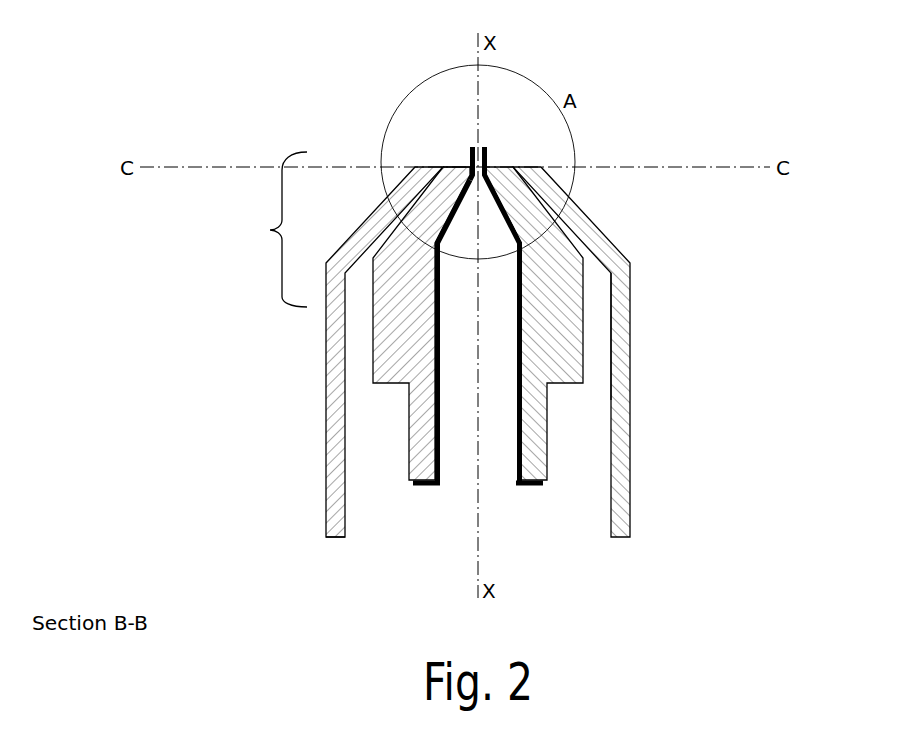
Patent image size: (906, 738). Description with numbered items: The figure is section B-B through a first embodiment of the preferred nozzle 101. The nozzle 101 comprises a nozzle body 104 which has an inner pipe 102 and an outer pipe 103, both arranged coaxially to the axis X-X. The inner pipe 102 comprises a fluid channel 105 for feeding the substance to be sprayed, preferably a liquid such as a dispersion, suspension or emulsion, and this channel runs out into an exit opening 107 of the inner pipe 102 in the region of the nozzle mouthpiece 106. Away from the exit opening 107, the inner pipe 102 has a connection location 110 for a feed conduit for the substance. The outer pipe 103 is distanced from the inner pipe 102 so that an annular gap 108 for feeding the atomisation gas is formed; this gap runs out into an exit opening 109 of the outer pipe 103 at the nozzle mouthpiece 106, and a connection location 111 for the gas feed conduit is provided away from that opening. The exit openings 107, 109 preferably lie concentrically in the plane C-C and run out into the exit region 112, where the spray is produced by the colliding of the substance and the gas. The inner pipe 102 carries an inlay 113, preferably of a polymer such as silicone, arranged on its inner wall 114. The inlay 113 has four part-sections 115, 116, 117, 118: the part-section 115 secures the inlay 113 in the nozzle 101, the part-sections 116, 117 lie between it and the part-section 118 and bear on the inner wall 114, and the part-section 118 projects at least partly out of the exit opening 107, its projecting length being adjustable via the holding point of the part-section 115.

The nozzle 101 is at (274, 69).
The inner pipe 102 is at (553, 357).
The outer pipe 103 is at (622, 492).
The nozzle body 104 is at (600, 170).
The fluid channel 105 is at (497, 442).
The nozzle mouthpiece 106 is at (268, 230).
The exit opening of the inner pipe 107 is at (494, 159).
The annular gap 108 is at (593, 302).
The exit opening of the outer pipe 109 is at (451, 160).
The connection location 110 is at (394, 432).
The connection location 111 is at (332, 552).
The exit region 112 is at (517, 136).
The inlay 113 is at (438, 472).
The inner wall 114 is at (446, 327).
The part-section 115 is at (427, 486).
The part-section 116 is at (441, 420).
The part-section 117 is at (523, 217).
The part-section 118 is at (470, 150).